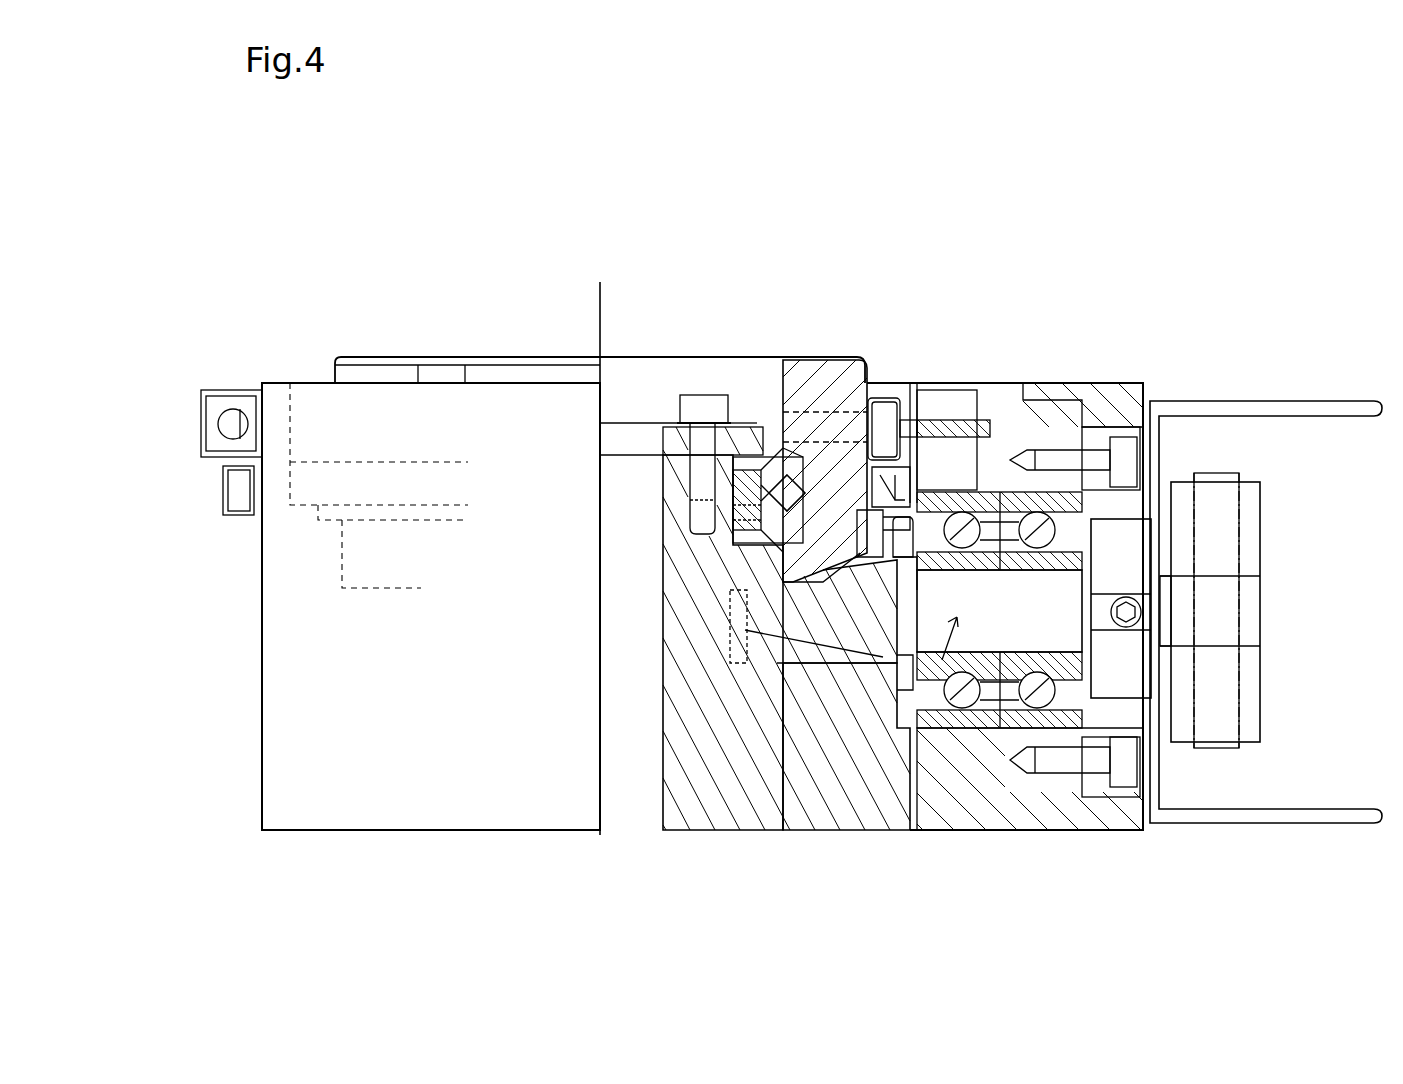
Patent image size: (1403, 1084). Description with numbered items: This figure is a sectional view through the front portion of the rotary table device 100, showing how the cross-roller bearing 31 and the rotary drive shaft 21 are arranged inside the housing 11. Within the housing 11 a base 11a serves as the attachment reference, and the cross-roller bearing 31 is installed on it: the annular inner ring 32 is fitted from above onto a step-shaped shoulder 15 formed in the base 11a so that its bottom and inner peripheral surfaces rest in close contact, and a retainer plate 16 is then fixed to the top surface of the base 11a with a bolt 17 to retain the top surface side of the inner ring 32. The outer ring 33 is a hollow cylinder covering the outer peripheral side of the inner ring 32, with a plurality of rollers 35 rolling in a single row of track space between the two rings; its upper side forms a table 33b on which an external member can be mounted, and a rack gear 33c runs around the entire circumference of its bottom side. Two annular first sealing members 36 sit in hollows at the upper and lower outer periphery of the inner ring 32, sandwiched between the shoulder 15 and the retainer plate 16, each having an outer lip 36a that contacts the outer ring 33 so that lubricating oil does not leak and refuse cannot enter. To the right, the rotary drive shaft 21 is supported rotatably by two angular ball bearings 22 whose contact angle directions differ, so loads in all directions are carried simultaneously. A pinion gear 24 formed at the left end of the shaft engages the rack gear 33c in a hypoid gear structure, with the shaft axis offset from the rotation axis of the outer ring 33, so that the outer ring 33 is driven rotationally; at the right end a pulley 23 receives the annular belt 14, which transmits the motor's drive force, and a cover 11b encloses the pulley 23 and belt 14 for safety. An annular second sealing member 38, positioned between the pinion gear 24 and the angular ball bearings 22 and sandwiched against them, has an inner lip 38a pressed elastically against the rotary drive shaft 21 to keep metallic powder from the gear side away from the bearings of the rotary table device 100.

The steering device 100 is at (1054, 243).
The housing 11 is at (262, 665).
The base 11a is at (700, 590).
The cover 11b is at (1248, 402).
The belt 14 is at (1243, 705).
The shoulder 15 is at (835, 640).
The retainer plate 16 is at (688, 400).
The bolt 17 is at (700, 398).
The rotary drive shaft 21 is at (940, 722).
The angular ball bearings 22 is at (1000, 740).
The pulley 23 is at (1262, 533).
The pinion gear 24 is at (892, 727).
The cross-roller bearing 31 is at (392, 352).
The inner ring 32 is at (735, 425).
The outer ring 33 is at (820, 385).
The table 33b is at (803, 360).
The rack gear 33c is at (917, 700).
The rollers 35 is at (832, 380).
The first sealing members 36 is at (752, 458).
The outer lip 36a is at (772, 452).
The second sealing member 38 is at (935, 430).
The inner lip 38a is at (960, 425).